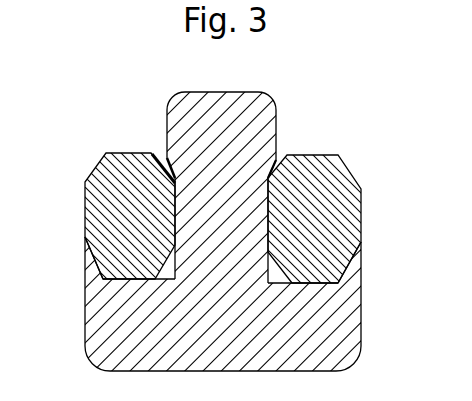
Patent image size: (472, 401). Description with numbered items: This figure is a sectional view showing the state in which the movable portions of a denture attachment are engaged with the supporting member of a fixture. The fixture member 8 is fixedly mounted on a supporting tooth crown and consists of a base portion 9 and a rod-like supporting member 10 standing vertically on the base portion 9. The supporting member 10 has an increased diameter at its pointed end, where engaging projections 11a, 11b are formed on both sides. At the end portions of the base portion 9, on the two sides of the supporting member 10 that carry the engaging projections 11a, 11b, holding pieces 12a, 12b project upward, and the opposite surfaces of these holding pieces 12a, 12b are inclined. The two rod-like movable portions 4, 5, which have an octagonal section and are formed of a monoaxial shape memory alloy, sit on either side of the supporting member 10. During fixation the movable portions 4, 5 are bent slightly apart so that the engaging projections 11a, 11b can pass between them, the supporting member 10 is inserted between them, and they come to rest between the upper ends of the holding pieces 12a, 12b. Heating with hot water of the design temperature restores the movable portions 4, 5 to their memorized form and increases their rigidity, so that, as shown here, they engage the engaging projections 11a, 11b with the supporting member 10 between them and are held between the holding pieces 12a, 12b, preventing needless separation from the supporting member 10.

The movable portion 4 is at (362, 190).
The movable portion 5 is at (97, 200).
The fixture member 8 is at (78, 308).
The base portion 9 is at (105, 340).
The supporting member 10 is at (218, 190).
The engaging projection 11a is at (167, 118).
The engaging projection 11b is at (276, 120).
The holding piece 12a is at (352, 268).
The holding piece 12b is at (90, 266).